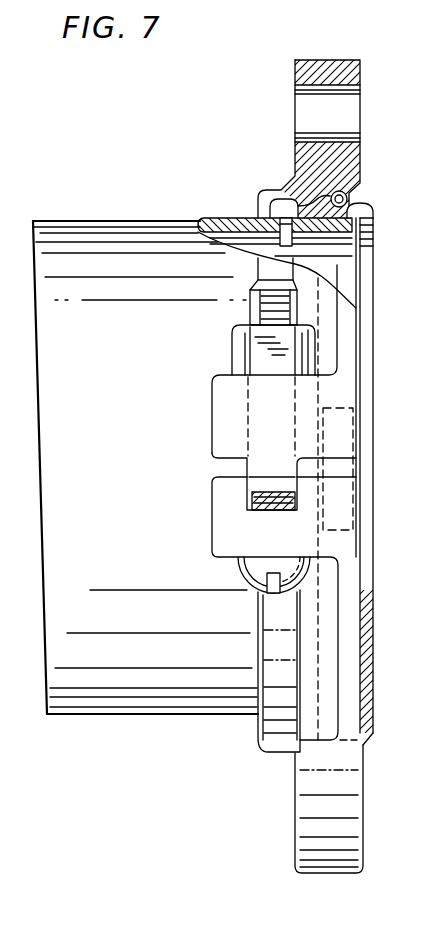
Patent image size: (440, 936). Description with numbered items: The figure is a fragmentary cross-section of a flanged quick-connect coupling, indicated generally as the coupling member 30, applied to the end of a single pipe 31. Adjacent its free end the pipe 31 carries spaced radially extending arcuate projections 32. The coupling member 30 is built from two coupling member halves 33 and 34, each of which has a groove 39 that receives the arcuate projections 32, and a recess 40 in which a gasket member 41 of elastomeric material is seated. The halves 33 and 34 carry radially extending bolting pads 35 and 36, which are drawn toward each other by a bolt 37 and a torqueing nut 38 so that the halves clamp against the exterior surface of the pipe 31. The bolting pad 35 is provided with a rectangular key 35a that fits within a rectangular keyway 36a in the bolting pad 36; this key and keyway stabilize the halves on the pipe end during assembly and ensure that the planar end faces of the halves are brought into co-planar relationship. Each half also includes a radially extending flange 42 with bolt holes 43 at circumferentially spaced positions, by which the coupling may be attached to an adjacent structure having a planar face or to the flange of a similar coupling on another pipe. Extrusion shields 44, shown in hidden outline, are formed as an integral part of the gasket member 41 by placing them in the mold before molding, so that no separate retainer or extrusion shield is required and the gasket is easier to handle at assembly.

The coupling member 30 is at (236, 599).
The pipe 31 is at (101, 232).
The radially extending arcuate projections 32 is at (263, 196).
The coupling member half 33 is at (362, 72).
The coupling member half 34 is at (352, 788).
The bolting pad 35 is at (219, 403).
The rectangular key 35a is at (266, 473).
The bolting pad 36 is at (212, 542).
The rectangular keyway 36a is at (265, 510).
The bolt 37 is at (257, 304).
The torqueing nut 38 is at (244, 350).
The groove 39 is at (290, 207).
The recess 40 is at (350, 186).
The gasket member 41 is at (366, 200).
The radially extending flange 42 is at (295, 72).
The bolt holes 43 is at (300, 92).
The extrusion shields 44 is at (348, 437).